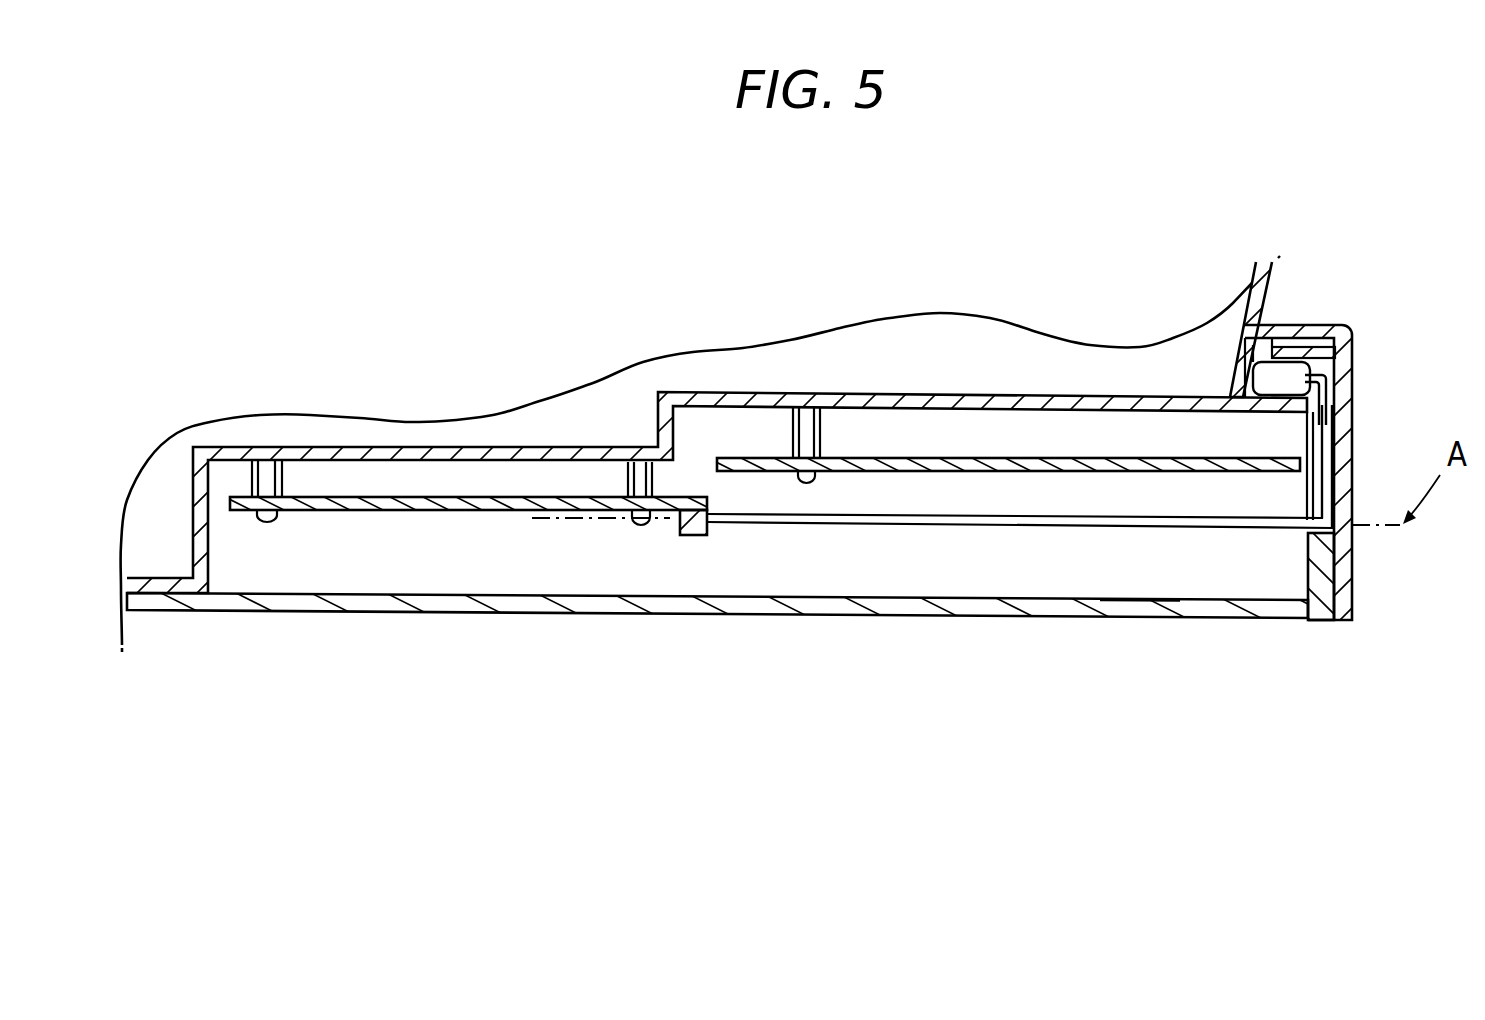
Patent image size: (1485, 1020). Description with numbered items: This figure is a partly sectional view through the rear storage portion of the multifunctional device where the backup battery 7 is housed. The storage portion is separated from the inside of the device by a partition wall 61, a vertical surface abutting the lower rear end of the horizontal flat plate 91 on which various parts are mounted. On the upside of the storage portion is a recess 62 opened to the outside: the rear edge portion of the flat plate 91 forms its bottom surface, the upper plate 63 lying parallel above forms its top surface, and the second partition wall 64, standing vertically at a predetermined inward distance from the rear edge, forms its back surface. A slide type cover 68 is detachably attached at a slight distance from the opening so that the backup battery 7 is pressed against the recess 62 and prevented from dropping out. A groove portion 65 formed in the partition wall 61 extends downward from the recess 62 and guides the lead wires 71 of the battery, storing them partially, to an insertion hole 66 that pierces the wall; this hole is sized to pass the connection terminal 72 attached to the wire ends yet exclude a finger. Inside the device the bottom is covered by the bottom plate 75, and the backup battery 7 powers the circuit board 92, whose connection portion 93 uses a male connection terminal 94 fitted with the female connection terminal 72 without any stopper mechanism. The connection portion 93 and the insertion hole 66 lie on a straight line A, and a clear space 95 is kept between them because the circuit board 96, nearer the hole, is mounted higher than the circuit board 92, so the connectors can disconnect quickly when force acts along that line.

The backup battery 7 is at (1280, 380).
The partition wall 61 is at (1313, 560).
The recess 62 is at (1320, 373).
The upper plate 63 is at (1347, 360).
The second partition wall 64 is at (1232, 375).
The groove portion 65 is at (1328, 433).
The insertion hole 66 is at (1350, 547).
The cover 68 is at (1353, 334).
The lead wires 71 is at (988, 523).
The connection terminal 72 is at (693, 522).
The bottom plate 75 is at (395, 604).
The flat plate 91 is at (891, 400).
The circuit board 92 is at (482, 503).
The connection portion 93 is at (688, 537).
The connection terminal 94 is at (693, 522).
The clear space 95 is at (1143, 585).
The circuit board 96 is at (1083, 465).